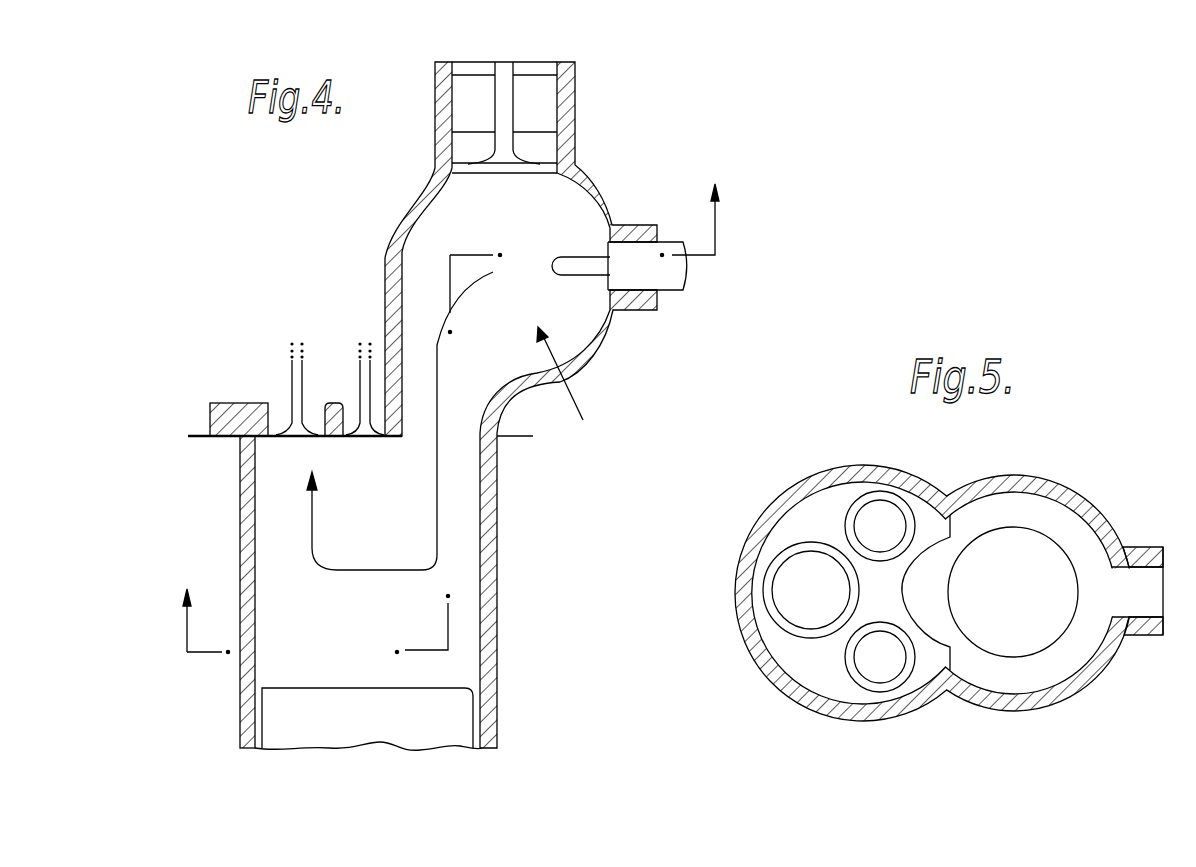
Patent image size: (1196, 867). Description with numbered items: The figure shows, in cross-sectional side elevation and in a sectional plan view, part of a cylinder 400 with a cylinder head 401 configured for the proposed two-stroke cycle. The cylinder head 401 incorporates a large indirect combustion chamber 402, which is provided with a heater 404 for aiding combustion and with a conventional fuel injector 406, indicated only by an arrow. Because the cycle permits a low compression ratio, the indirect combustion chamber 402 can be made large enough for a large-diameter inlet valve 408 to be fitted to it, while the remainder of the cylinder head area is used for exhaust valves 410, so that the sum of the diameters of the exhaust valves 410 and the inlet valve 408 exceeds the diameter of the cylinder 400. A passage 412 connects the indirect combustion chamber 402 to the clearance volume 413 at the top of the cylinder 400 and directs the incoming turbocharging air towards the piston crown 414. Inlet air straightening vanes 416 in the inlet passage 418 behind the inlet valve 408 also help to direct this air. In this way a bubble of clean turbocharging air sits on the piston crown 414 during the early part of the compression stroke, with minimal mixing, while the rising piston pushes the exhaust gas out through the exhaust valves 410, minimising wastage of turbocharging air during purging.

In FIG. 4, the cylinder 400 is at (193, 482).
In FIG. 4, the cylinder head 401 is at (340, 237).
In FIG. 4, the indirect combustion chamber 402 is at (535, 231).
In FIG. 4, the heater 404 is at (587, 267).
In FIG. 5, the heater 404 is at (1135, 580).
In FIG. 4, the fuel injector 406 is at (572, 397).
In FIG. 4, the inlet valve 408 is at (510, 168).
In FIG. 5, the inlet valve 408 is at (1033, 567).
In FIG. 4, the exhaust valves 410 is at (357, 377).
In FIG. 5, the exhaust valves 410 is at (875, 517).
In FIG. 4, the passage 412 is at (457, 425).
In FIG. 5, the passage 412 is at (920, 587).
In FIG. 4, the clearance volume 413 is at (400, 506).
In FIG. 4, the piston crown 414 is at (430, 703).
In FIG. 4, the inlet air straightening vanes 416 is at (465, 116).
In FIG. 4, the inlet passage 418 is at (533, 67).